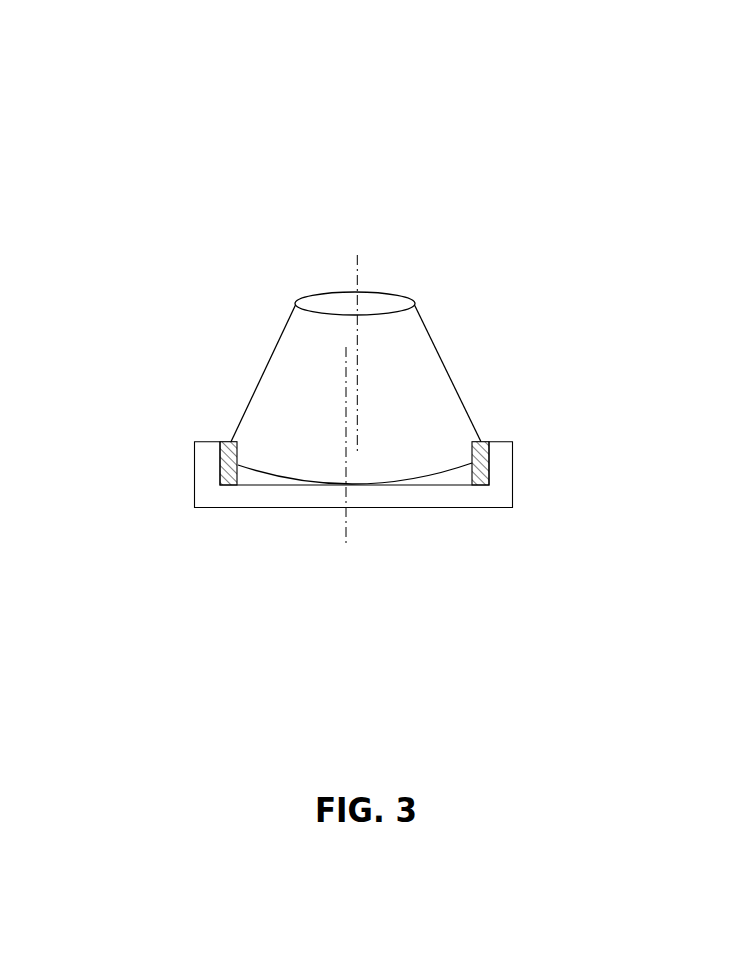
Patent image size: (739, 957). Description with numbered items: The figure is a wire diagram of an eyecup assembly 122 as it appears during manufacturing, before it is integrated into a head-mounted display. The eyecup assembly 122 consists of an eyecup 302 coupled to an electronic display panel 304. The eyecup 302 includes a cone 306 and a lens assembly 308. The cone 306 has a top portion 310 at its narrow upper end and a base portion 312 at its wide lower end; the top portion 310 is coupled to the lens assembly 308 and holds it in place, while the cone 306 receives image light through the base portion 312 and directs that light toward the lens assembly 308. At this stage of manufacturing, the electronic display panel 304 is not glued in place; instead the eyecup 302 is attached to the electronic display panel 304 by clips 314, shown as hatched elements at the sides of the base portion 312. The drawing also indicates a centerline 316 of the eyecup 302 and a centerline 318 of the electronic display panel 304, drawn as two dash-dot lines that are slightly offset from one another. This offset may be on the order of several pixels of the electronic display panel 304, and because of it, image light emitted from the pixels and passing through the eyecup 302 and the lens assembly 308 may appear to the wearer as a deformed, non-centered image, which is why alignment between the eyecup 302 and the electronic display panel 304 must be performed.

The eyecup assembly 122 is at (25, 42).
The eyecup 302 is at (354, 315).
The electronic display panel 304 is at (375, 496).
The cone 306 is at (452, 398).
The lens assembly 308 is at (292, 251).
The top portion 310 is at (269, 266).
The base portion 312 is at (447, 478).
The clips 314 is at (158, 548).
The centerline of the eyecup 316 is at (355, 264).
The centerline of the display panel 318 is at (344, 524).